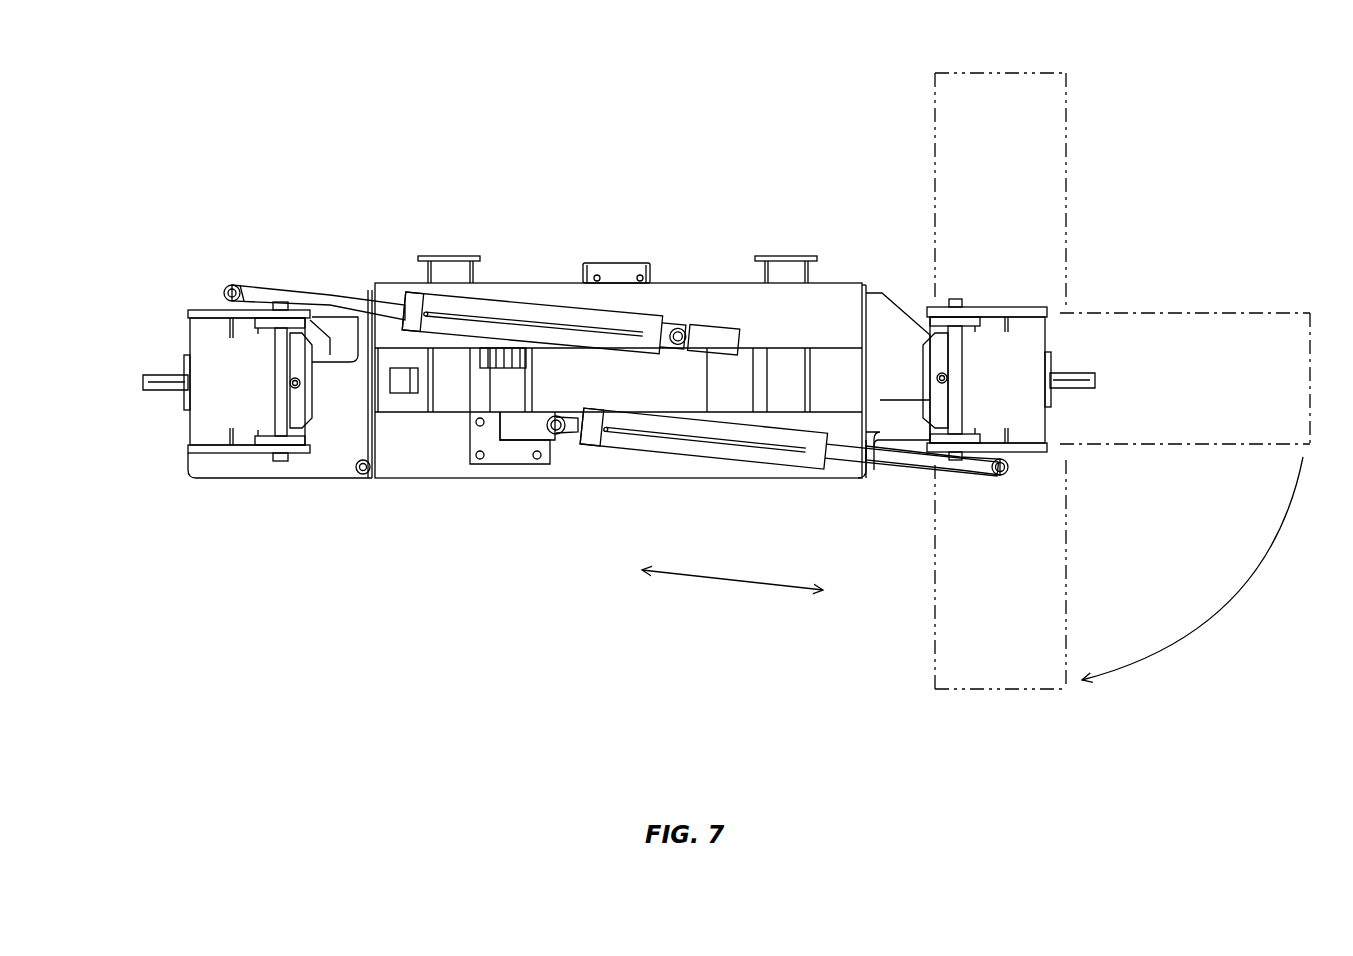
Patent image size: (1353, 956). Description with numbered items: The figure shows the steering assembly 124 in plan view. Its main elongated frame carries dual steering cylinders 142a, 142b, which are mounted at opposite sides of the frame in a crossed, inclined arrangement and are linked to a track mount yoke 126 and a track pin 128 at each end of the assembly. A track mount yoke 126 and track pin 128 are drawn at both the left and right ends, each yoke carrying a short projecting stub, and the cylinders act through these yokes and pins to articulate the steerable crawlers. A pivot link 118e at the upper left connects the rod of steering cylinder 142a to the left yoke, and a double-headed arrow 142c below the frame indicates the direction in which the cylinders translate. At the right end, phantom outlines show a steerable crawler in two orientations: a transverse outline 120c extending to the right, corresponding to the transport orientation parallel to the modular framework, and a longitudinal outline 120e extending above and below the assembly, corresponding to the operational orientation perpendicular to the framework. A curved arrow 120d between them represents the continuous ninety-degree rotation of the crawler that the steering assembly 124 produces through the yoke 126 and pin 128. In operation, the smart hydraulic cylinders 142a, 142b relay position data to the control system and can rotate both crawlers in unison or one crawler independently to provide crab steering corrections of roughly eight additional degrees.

The steering assembly 124 is at (218, 126).
The pivot link 118e is at (222, 292).
The steering cylinder 142a is at (488, 307).
The steering cylinder 142b is at (655, 448).
The direction of translation 142c is at (755, 585).
The track mount yoke 126 is at (213, 410).
The track pin 128 is at (282, 425).
The wheel position (extended) 120c is at (1175, 325).
The wheel rotation direction 120d is at (1225, 595).
The wheel position (rotated) 120e is at (952, 594).